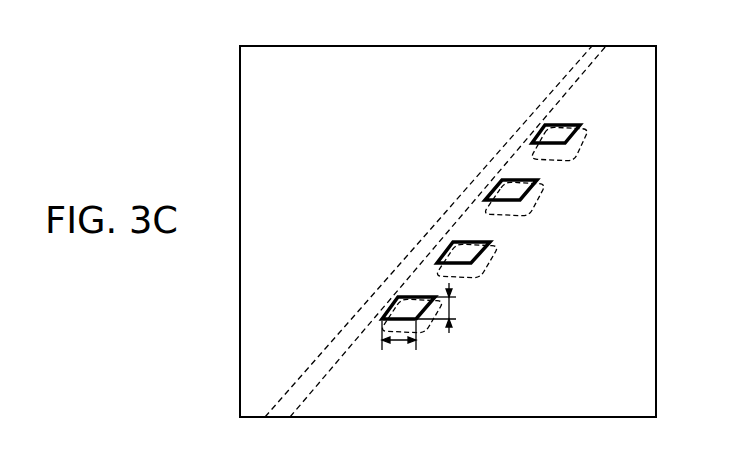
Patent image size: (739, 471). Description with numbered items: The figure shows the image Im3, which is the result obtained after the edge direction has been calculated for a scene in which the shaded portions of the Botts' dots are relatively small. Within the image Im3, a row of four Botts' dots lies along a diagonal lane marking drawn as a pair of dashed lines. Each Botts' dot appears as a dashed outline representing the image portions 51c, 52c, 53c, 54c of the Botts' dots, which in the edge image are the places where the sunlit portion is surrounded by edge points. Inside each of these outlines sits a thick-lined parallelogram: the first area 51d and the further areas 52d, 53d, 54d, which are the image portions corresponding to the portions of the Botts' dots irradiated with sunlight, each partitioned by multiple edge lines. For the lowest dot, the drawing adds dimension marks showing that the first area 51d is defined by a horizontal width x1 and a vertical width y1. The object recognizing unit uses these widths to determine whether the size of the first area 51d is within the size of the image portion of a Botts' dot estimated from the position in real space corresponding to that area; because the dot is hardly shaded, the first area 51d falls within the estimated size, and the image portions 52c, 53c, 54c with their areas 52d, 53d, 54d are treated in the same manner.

The image Im3 is at (577, 46).
The image portion of the Botts' dot 51c is at (430, 326).
The first area 51d is at (400, 300).
The image portion of the Botts' dot 52c is at (487, 258).
The area 52d is at (450, 250).
The image portion of the Botts' dot 53c is at (530, 195).
The area 53d is at (495, 190).
The image portion of the Botts' dot 54c is at (567, 148).
The area 54d is at (547, 133).
The horizontal width x1 is at (399, 345).
The vertical width y1 is at (447, 308).